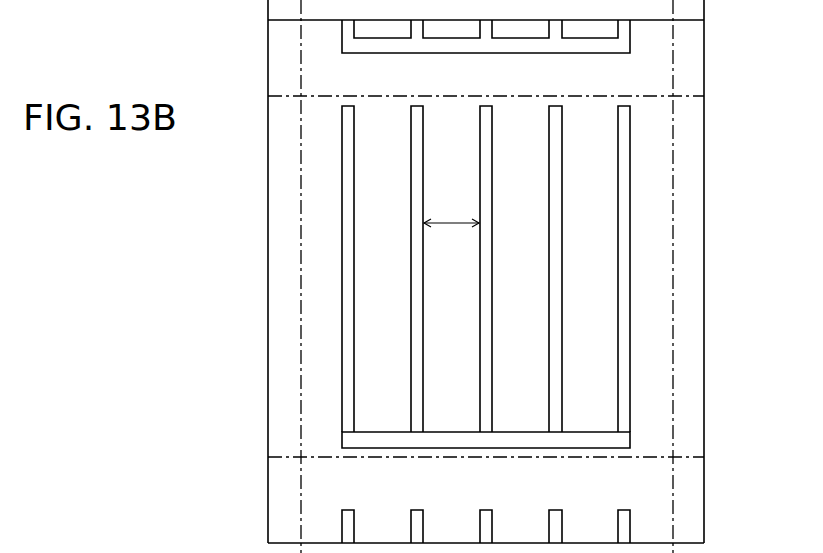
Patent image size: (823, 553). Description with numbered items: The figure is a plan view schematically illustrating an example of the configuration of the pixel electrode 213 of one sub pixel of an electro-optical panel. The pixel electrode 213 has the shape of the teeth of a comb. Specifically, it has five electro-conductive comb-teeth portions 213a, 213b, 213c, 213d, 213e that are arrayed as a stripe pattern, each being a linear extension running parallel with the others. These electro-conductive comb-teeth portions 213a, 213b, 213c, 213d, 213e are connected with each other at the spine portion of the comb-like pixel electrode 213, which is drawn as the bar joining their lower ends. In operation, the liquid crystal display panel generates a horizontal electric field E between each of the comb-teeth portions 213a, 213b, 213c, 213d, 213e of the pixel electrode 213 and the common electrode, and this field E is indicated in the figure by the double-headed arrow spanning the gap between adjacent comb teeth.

The pixel electrode 213 is at (545, 252).
The electro-conductive comb-teeth portion 213a is at (348, 105).
The electro-conductive comb-teeth portion 213b is at (417, 105).
The electro-conductive comb-teeth portion 213c is at (486, 105).
The electro-conductive comb-teeth portion 213d is at (555, 105).
The electro-conductive comb-teeth portion 213e is at (624, 105).
The horizontal electric field E is at (451, 238).